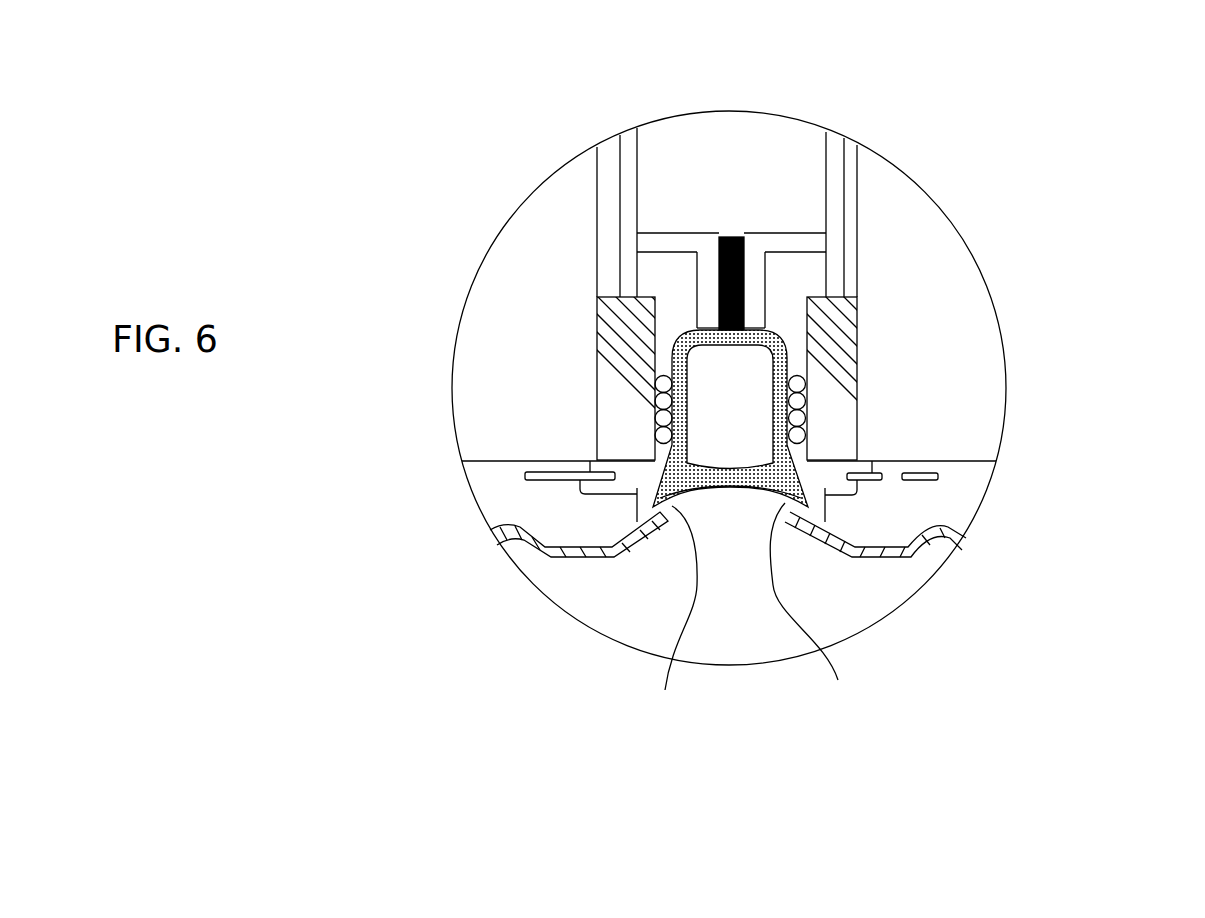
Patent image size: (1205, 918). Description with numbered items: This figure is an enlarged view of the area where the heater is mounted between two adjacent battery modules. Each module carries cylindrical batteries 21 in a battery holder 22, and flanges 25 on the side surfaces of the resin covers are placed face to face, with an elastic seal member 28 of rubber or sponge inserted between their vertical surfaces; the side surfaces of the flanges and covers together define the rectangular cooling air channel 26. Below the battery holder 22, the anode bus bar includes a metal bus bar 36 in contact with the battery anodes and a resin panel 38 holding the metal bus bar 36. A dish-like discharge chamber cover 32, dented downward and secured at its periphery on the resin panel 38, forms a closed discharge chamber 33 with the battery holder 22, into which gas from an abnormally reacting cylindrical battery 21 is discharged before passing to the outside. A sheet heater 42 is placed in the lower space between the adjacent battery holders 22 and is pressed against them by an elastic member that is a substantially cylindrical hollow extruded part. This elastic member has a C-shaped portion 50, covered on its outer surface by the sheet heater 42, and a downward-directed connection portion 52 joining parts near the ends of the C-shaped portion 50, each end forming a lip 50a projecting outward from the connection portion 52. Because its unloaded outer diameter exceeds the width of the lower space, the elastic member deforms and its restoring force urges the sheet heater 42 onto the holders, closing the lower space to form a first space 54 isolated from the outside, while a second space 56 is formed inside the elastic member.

The cylindrical battery 21 is at (522, 293).
The battery holder 22 is at (608, 363).
The flange 25 is at (677, 232).
The cooling air channel 26 is at (732, 173).
The elastic seal member 28 is at (732, 237).
The discharge chamber cover 32 is at (558, 550).
The discharge chamber 33 is at (512, 507).
The metal bus bar 36 is at (540, 482).
The resin panel 38 is at (627, 490).
The sheet heater 42 is at (656, 403).
The C-shaped portion 50 is at (783, 346).
The lip 50a is at (665, 690).
The connection portion 52 is at (727, 490).
The first space 54 is at (783, 294).
The second space 56 is at (739, 420).